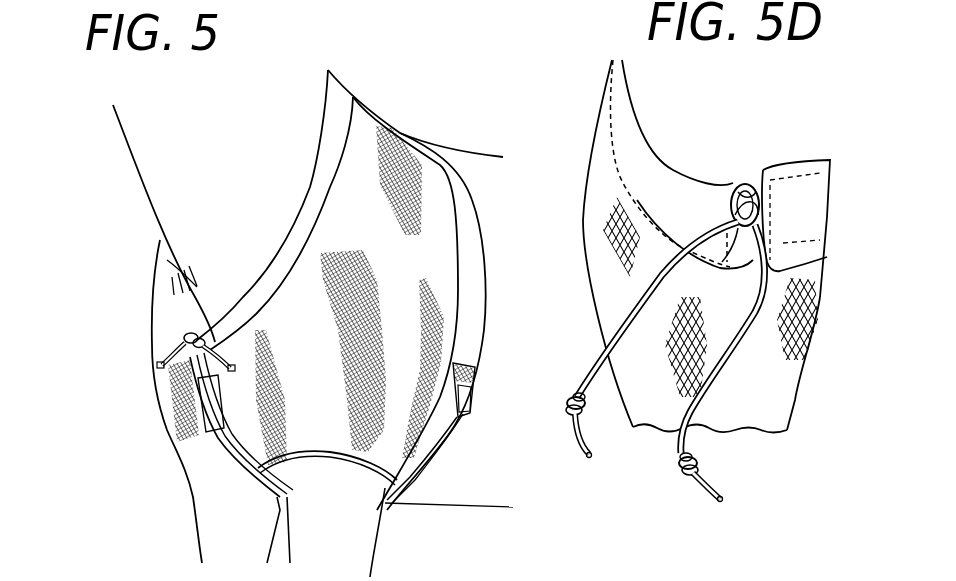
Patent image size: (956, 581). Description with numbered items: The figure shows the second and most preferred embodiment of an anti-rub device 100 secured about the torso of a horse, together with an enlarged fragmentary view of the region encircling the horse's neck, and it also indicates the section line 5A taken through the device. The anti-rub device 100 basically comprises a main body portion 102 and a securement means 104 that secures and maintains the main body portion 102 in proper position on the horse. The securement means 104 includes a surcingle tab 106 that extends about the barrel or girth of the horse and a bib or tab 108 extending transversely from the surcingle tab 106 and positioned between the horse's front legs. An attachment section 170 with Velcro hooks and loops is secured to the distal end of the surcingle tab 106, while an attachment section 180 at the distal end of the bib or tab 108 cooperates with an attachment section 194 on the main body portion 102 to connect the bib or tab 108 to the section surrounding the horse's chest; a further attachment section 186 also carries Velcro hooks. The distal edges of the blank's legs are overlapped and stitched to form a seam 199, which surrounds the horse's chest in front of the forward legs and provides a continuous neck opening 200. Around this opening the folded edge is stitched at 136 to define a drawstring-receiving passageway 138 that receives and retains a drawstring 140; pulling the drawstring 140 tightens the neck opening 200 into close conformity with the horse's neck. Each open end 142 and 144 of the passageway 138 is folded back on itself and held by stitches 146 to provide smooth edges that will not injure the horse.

In FIG. 5, the anti-rub device 100 is at (383, 103).
In FIG. 5, the main body portion 102 is at (418, 176).
In FIG. 5, the securement means 104 is at (473, 327).
In FIG. 5, the surcingle tab 106 is at (427, 470).
In FIG. 5, the bib or tab 108 is at (240, 470).
In FIG. 5D, the stitching 136 is at (640, 192).
In FIG. 5D, the drawstring-receiving passageway 138 is at (755, 190).
In FIG. 5, the drawstring 140 is at (224, 345).
In FIG. 5D, the drawstring 140 is at (590, 446).
In FIG. 5D, the open end of passageway 142 is at (735, 185).
In FIG. 5D, the open end of passageway 144 is at (766, 178).
In FIG. 5D, the stitches 146 is at (728, 210).
In FIG. 5, the attachment section 170 is at (464, 421).
In FIG. 5, the attachment section 180 is at (203, 437).
In FIG. 5, the attachment section 186 is at (512, 367).
In FIG. 5, the attachment section 194 is at (212, 381).
In FIG. 5, the seam 199 is at (166, 381).
In FIG. 5D, the seam 199 is at (777, 410).
In FIG. 5, the neck opening 200 is at (168, 300).
In FIG. 5D, the neck opening 200 is at (650, 110).
In FIG. 5, the section line 5A- 5A is at (460, 337).